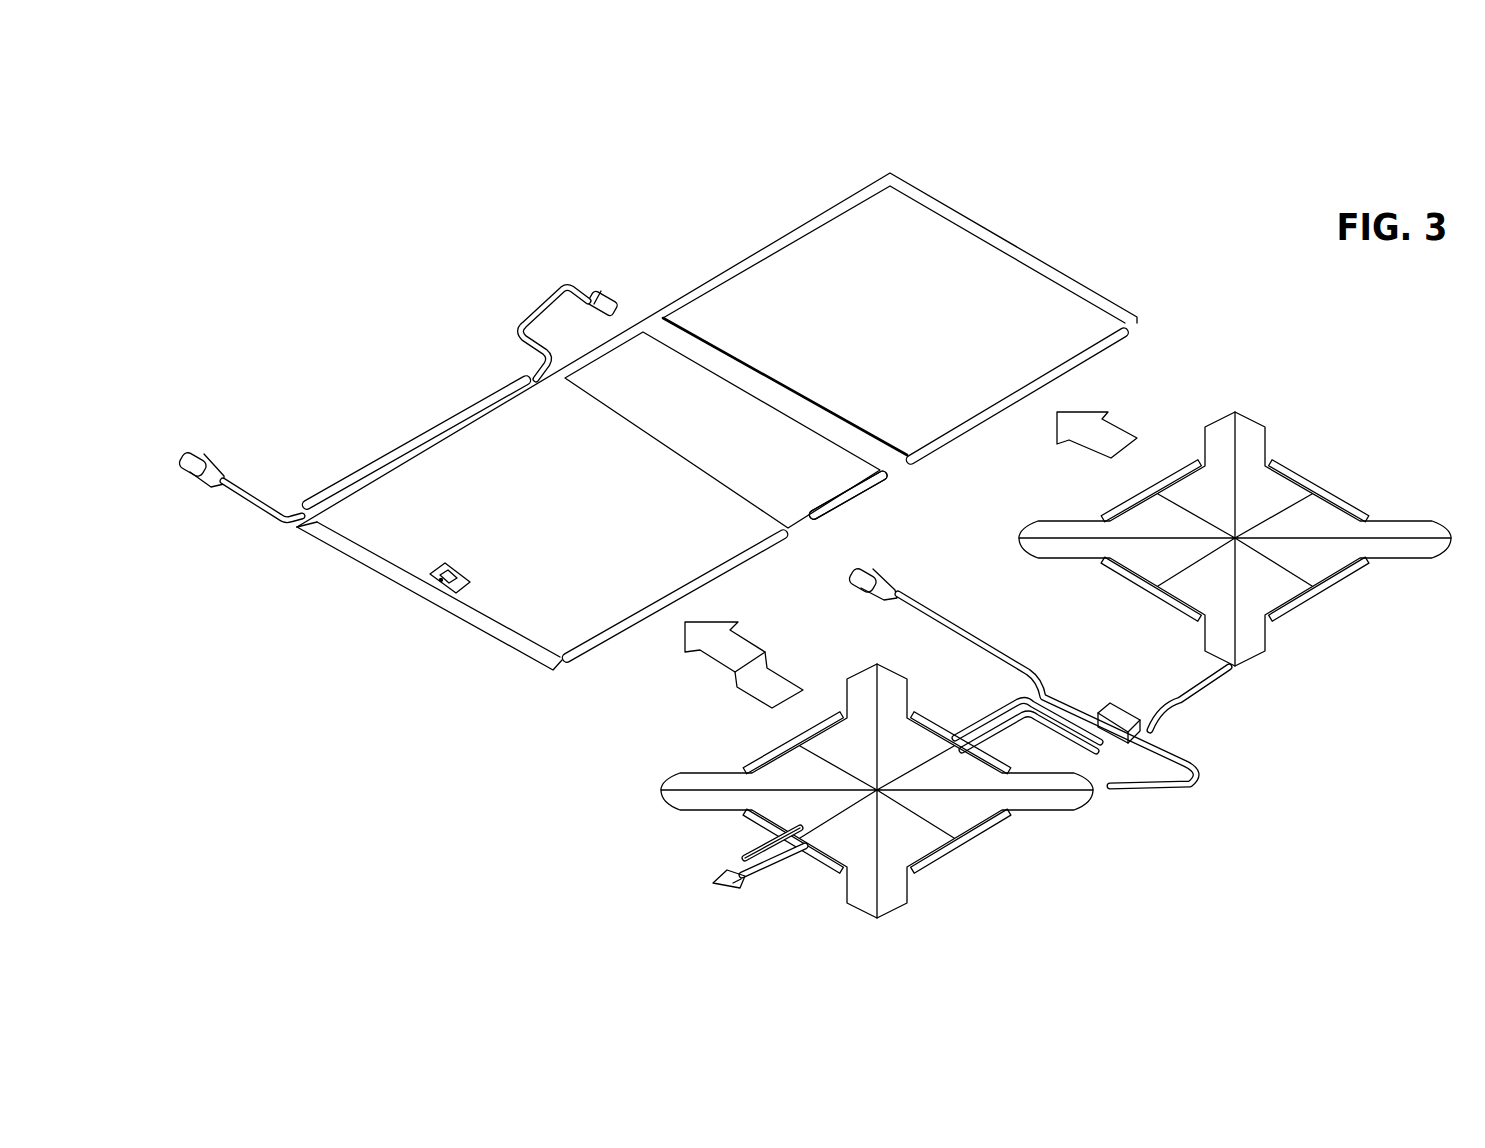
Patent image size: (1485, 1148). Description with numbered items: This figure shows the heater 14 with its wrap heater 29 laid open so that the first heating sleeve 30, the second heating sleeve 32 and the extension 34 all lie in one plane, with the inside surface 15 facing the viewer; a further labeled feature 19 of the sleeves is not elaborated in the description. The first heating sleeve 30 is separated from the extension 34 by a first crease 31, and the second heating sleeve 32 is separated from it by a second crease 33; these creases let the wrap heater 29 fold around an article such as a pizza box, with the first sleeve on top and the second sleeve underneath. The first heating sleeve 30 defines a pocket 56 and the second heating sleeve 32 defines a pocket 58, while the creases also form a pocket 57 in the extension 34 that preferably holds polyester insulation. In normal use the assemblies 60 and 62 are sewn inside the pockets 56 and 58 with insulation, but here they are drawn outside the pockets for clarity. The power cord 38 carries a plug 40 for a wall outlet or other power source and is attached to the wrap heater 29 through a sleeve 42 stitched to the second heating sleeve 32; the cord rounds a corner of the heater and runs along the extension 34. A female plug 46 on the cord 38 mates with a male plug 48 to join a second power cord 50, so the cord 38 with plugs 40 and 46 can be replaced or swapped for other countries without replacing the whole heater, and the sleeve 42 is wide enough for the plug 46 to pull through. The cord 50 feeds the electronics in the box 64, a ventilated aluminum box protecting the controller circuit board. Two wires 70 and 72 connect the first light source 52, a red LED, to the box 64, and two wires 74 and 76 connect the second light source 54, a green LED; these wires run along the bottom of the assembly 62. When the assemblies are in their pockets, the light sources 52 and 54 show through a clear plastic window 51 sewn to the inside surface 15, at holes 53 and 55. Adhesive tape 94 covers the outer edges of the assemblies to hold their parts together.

The solar panel assembly 14 is at (283, 378).
The wrap heater 29 is at (345, 342).
The inside surface 15 is at (878, 338).
The frame border 19 is at (811, 232).
The first heating sleeve 30 is at (1070, 295).
The first crease 31 is at (673, 336).
The second heating sleeve 32 is at (530, 630).
The second crease 33 is at (650, 440).
The extension 34 is at (846, 478).
The power cord 38 is at (262, 506).
The plug 40 is at (197, 460).
The sleeve 42 is at (437, 428).
The female plug 46 is at (601, 296).
The male plug 48 is at (877, 579).
The power cord 50 is at (984, 648).
The window 51 is at (452, 572).
The first light source 52 is at (735, 890).
The hole 53 is at (438, 588).
The second light source 54 is at (717, 879).
The hole 55 is at (418, 581).
The pocket 56 is at (1080, 362).
The pocket 57 is at (832, 515).
The pocket 58 is at (608, 642).
The assembly 60 is at (1270, 488).
The assembly 62 is at (900, 897).
The box 64 is at (1117, 710).
The wire 70 is at (762, 882).
The wire 72 is at (790, 860).
The wire 74 is at (741, 857).
The wire 76 is at (757, 845).
The adhesive tape 94 is at (1333, 505).